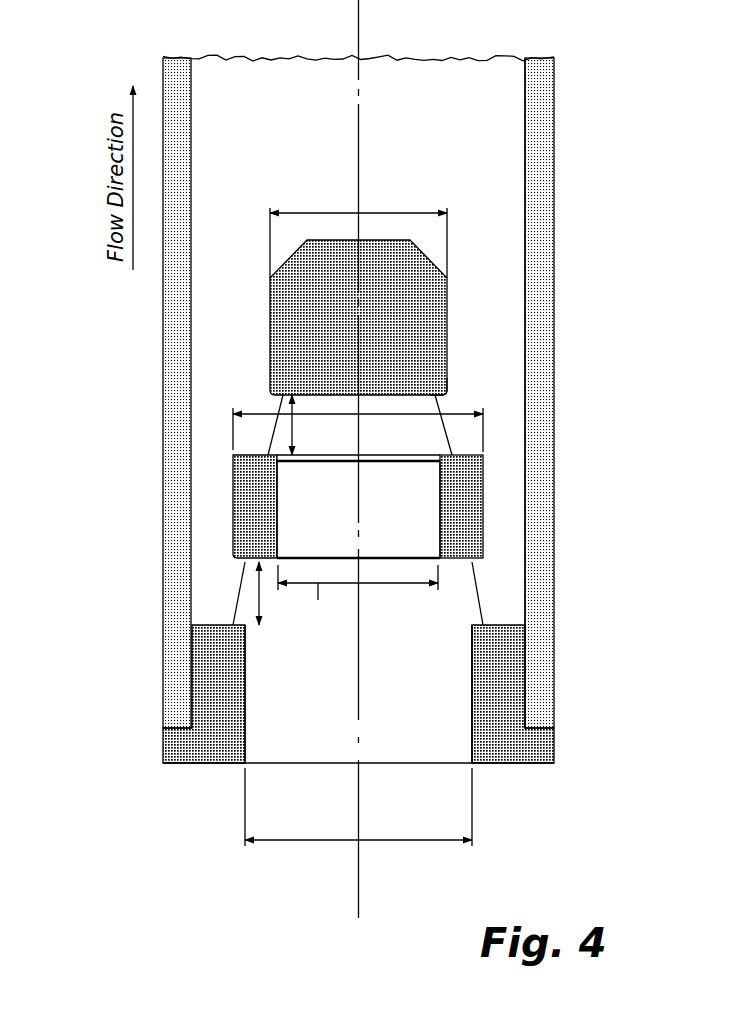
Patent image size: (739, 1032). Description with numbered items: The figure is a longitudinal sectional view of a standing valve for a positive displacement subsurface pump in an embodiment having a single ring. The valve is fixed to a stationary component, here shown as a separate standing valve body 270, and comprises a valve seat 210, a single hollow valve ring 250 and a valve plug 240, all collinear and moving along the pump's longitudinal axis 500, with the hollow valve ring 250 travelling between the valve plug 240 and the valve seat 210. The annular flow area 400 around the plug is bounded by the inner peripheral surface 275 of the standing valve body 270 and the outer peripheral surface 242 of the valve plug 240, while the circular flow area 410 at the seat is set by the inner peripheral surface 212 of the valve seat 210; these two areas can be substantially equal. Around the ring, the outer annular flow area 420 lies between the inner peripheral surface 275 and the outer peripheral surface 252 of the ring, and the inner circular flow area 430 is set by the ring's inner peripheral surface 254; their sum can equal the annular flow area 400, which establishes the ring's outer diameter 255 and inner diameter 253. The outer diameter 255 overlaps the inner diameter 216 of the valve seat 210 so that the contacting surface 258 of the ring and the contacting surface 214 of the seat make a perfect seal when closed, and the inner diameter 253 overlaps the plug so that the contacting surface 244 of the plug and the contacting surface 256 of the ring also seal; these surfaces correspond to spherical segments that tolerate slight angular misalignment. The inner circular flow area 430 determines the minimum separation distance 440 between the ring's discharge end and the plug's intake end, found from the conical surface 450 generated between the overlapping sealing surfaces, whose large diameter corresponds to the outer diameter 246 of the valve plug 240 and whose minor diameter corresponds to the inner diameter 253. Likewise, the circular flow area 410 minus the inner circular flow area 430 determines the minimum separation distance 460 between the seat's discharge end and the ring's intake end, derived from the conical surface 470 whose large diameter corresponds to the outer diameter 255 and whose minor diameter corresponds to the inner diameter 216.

The valve seat 210 is at (361, 722).
The inner peripheral surface of valve seat 212 is at (470, 722).
The contacting surface of valve seat 214 is at (478, 623).
The inner diameter of valve seat 216 is at (303, 841).
The valve plug 240 is at (362, 328).
The outer peripheral surface of valve plug 242 is at (447, 334).
The contacting surface of valve plug 244 is at (446, 393).
The outer diameter of valve plug 246 is at (402, 212).
The hollow valve ring 250 is at (361, 564).
The outer peripheral surface of hollow valve ring 252 is at (483, 527).
The inner diameter of hollow valve ring 253 is at (318, 583).
The inner peripheral surface of hollow valve ring 254 is at (437, 522).
The outer diameter of hollow valve ring 255 is at (258, 410).
The contacting surface of hollow valve ring 256 is at (432, 452).
The contacting surface of hollow valve ring 258 is at (477, 560).
The standing valve body 270 is at (540, 116).
The inner peripheral surface of standing valve body 275 is at (525, 231).
The annular flow area 400 is at (230, 320).
The circular flow area 410 is at (292, 703).
The outer annular flow area 420 is at (213, 510).
The inner circular flow area 430 is at (302, 540).
The minimum separation distance 440 is at (297, 428).
The conical surface 450 is at (274, 424).
The minimum separation distance 460 is at (260, 596).
The conical surface 470 is at (238, 596).
The longitudinal axis 500 is at (358, 158).